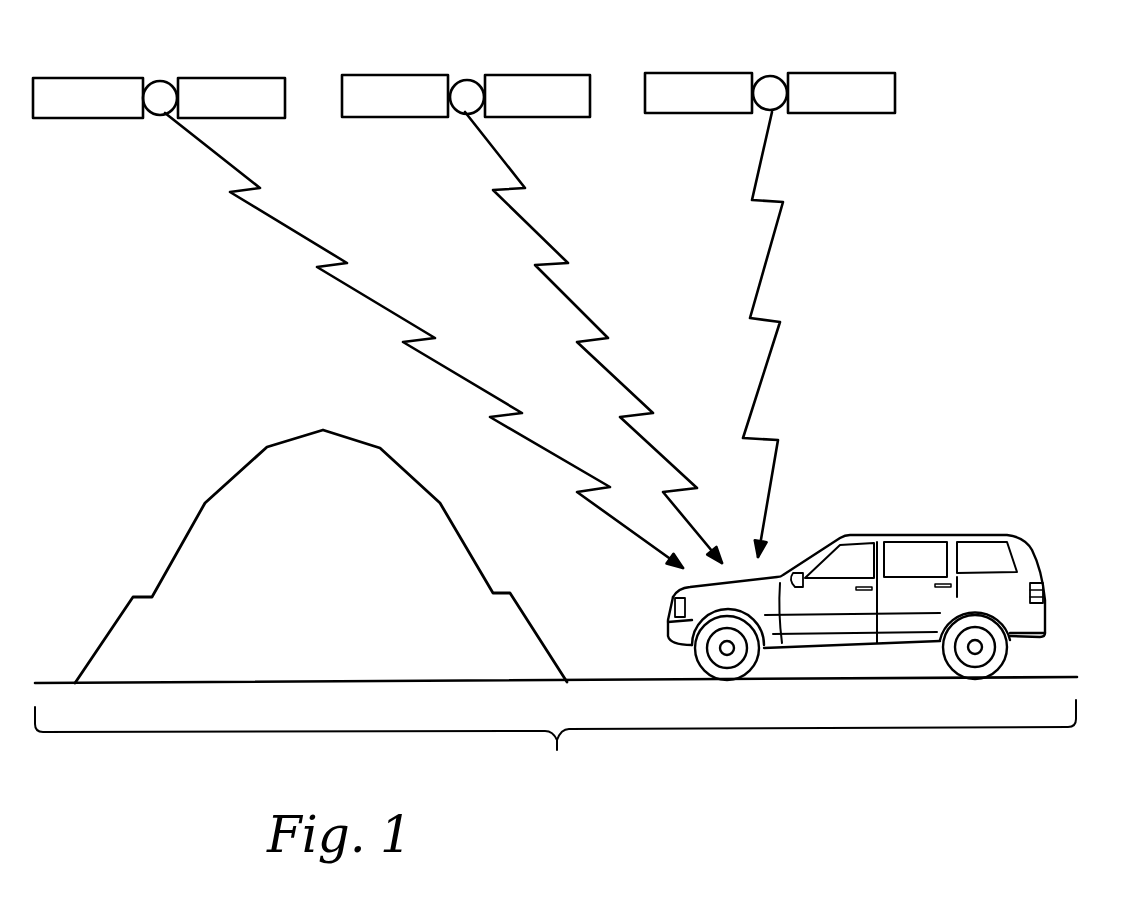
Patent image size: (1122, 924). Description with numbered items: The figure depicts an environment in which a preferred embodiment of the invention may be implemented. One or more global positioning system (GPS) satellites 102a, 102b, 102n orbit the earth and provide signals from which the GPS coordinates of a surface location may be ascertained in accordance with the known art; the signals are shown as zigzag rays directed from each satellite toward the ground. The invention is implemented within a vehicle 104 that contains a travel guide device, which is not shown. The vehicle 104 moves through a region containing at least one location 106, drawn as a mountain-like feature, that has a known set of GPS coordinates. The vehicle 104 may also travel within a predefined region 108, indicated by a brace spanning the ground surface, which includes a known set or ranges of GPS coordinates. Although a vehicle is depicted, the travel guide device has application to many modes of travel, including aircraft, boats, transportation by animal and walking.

The global positioning system satellite 102a is at (163, 78).
The global positioning system satellite 102b is at (470, 76).
The global positioning system satellite 102n is at (773, 74).
The vehicle 104 is at (923, 532).
The location 106 is at (352, 438).
The predefined region 108 is at (556, 734).